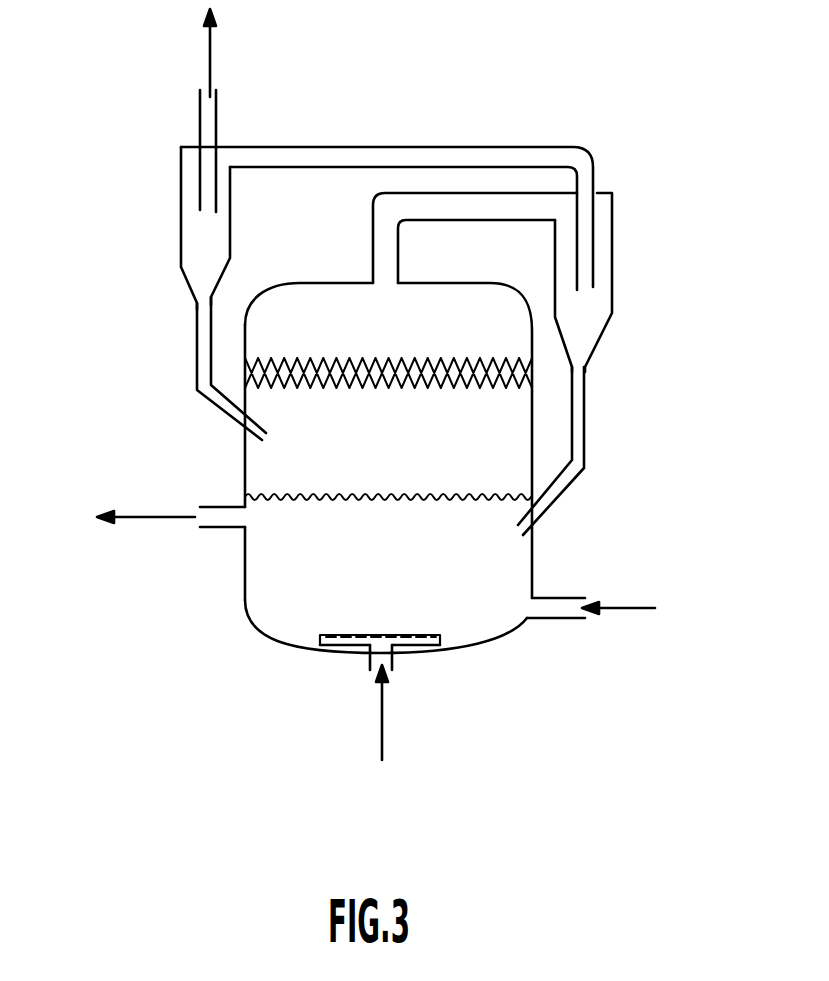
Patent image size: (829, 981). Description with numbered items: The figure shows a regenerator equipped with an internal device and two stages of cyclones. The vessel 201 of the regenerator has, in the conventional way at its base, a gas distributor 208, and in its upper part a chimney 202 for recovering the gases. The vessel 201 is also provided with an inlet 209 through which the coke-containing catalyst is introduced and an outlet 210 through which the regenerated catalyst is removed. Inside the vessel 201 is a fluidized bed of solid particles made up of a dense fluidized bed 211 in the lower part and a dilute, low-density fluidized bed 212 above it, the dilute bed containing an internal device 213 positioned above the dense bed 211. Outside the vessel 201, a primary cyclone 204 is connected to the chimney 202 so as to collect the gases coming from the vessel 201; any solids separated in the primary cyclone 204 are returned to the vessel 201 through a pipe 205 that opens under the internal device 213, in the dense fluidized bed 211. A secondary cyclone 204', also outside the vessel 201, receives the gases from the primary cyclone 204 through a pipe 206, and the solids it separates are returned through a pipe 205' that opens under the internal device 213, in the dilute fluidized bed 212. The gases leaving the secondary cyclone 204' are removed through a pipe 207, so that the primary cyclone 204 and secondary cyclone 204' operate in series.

The vessel 201 is at (243, 553).
The chimney 202 is at (373, 240).
The primary cyclone 204 is at (640, 276).
The secondary cyclone 204' is at (158, 228).
The pipe 205 is at (595, 451).
The pipe 205' is at (180, 368).
The pipe 206 is at (415, 157).
The pipe 207 is at (217, 107).
The gas distributor 208 is at (428, 650).
The inlet 209 is at (557, 620).
The outlet 210 is at (243, 507).
The dense fluidized bed 211 is at (350, 592).
The dilute fluidized bed 212 is at (430, 430).
The internal device 213 is at (527, 373).